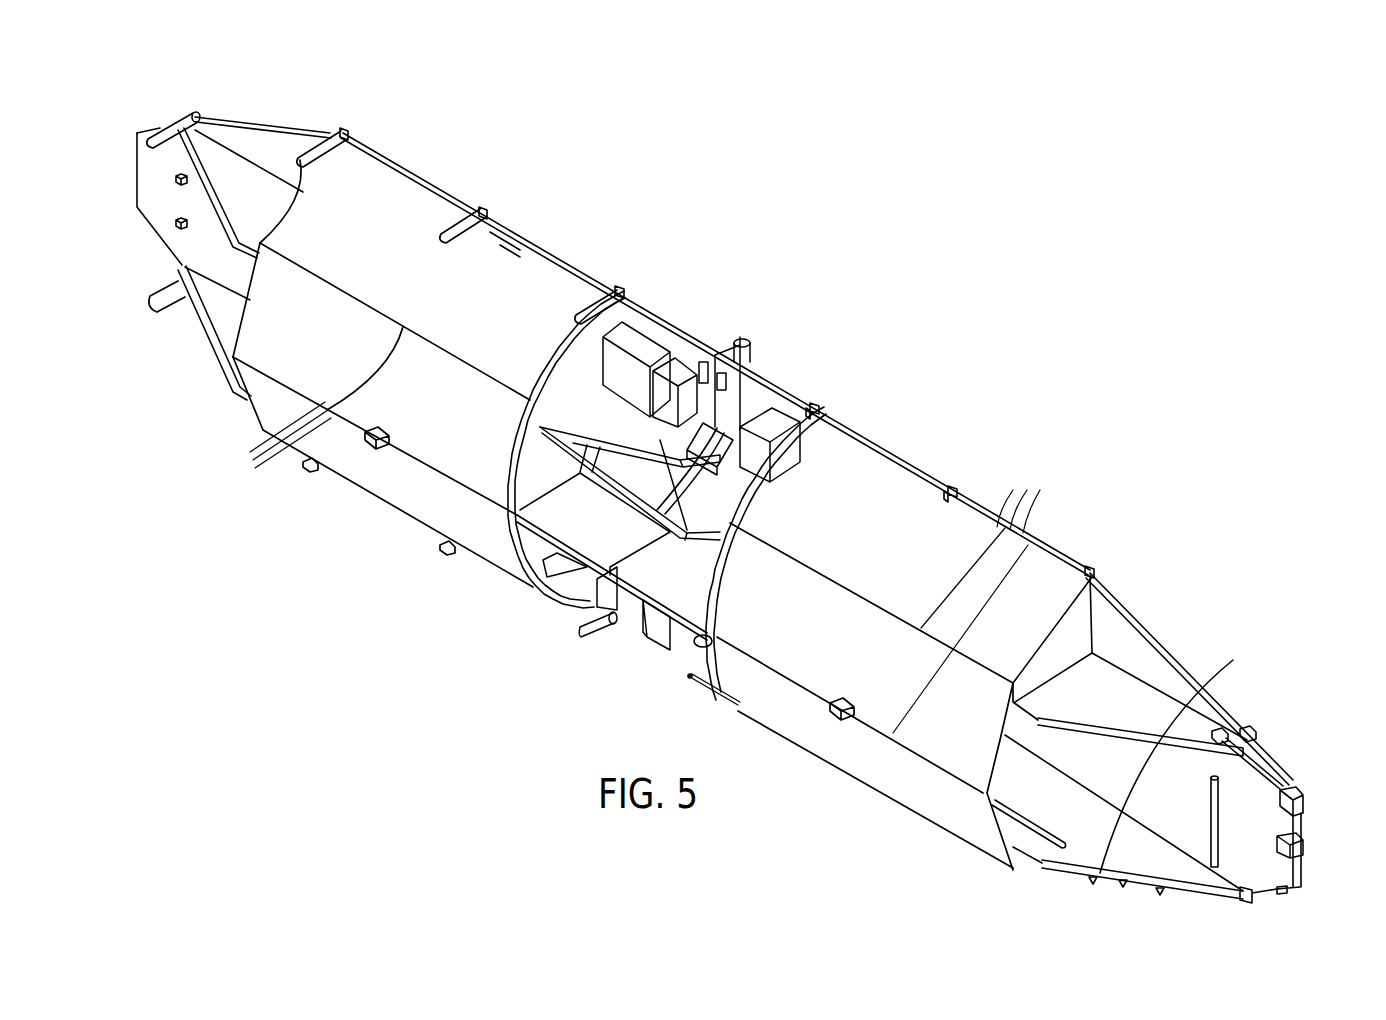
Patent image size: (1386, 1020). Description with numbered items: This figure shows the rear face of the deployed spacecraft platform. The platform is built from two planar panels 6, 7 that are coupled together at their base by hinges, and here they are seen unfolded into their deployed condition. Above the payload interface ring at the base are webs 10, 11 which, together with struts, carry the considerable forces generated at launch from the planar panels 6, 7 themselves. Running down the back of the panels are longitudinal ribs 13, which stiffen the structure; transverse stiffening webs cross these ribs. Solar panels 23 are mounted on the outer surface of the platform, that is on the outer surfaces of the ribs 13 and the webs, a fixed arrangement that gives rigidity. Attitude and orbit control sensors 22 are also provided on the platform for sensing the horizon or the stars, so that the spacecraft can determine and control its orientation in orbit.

The panel 6 is at (278, 124).
The panel 7 is at (1114, 592).
The web 10 is at (640, 605).
The web 11 is at (620, 427).
The longitudinal ribs 13 is at (220, 212).
The attitude and orbit control sensors 22 is at (1307, 847).
The solar panels 23 is at (631, 567).